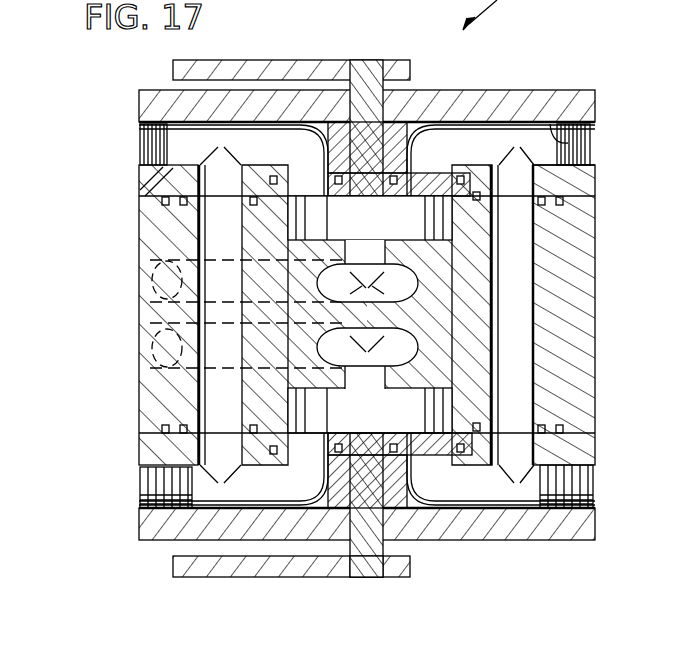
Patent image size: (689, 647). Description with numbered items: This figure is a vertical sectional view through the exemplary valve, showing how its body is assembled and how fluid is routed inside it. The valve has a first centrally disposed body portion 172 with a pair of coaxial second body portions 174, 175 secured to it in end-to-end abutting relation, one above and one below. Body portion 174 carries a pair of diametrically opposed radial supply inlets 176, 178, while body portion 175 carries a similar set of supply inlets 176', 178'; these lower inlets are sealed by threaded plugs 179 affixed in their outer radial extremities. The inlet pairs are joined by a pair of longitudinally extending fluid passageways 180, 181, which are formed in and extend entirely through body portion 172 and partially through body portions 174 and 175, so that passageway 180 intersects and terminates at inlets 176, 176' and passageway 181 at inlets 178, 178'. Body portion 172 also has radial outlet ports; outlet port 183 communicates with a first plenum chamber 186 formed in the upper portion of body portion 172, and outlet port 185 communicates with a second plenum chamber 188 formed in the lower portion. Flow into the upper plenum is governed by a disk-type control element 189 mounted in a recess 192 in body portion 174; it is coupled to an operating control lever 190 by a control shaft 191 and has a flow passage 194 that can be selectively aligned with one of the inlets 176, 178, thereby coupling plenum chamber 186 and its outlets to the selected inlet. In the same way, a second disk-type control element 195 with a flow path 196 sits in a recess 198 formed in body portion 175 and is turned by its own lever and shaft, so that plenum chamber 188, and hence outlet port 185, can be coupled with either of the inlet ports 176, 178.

The first centrally disposed body portion 172 is at (582, 298).
The second body portion 174 is at (583, 100).
The second body portion 175 is at (575, 555).
The radial supply inlet 176 is at (119, 144).
The supply inlet 176' is at (131, 487).
The radial supply inlet 178 is at (607, 141).
The supply inlet 178' is at (609, 472).
The threaded plug 179 is at (155, 490).
The longitudinally extending fluid passageway 180 is at (200, 224).
The longitudinally extending fluid passageway 181 is at (540, 232).
The radial outlet port 183 is at (152, 290).
The radial outlet port 185 is at (152, 350).
The first plenum chamber 186 is at (432, 185).
The second plenum chamber 188 is at (412, 440).
The disk-type control element 189 is at (468, 200).
The operating control lever 190 is at (260, 60).
The control shaft 191 is at (363, 83).
The recess 192 is at (555, 168).
The flow passage 194 is at (322, 200).
The second disk-type control element 195 is at (480, 505).
The flow path 196 is at (293, 447).
The recess 198 is at (470, 425).